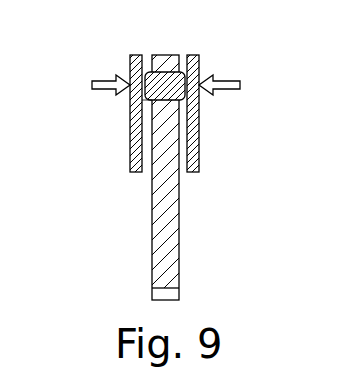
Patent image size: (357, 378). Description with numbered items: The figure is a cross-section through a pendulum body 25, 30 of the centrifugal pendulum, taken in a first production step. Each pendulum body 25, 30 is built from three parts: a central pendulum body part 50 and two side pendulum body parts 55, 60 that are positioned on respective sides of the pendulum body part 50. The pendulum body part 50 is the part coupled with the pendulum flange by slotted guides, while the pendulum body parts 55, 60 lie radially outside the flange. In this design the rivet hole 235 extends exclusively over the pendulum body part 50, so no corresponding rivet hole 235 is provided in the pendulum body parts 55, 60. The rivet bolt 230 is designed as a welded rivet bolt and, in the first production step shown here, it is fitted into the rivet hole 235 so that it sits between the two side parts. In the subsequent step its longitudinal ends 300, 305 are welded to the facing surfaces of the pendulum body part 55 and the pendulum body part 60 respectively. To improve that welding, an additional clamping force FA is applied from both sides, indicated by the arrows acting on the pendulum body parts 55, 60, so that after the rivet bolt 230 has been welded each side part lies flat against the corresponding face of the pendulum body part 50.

The pendulum body 25 is at (165, 164).
The pendulum body 30 is at (165, 164).
The pendulum body part 50 is at (160, 208).
The pendulum body part 55 is at (130, 125).
The pendulum body part 60 is at (198, 117).
The rivet bolt 230 is at (165, 72).
The rivet hole 235 is at (150, 100).
The longitudinal end 300 is at (89, 98).
The longitudinal end 305 is at (240, 104).